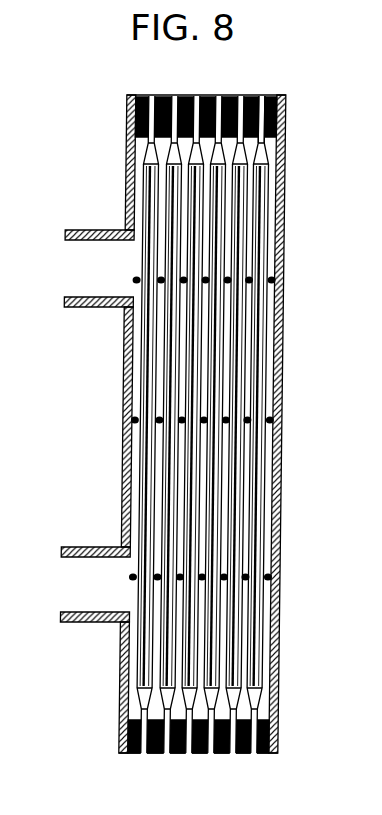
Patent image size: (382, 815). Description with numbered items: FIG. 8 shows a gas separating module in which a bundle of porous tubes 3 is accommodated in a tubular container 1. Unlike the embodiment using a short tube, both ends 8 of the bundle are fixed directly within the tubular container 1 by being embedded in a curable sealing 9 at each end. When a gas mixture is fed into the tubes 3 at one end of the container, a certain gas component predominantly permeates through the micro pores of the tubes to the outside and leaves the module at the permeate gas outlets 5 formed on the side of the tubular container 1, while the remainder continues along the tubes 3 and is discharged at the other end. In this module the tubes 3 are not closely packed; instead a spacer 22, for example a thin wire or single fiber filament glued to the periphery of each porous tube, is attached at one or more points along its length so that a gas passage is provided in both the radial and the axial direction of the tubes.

The tubular container 1 is at (290, 170).
The tubes 3 is at (267, 228).
The permeate gas outlets 5 is at (81, 276).
The ends of the bundle of porous material tubes 8 is at (273, 97).
The sealing 9 is at (257, 97).
The spacer 22 is at (255, 280).